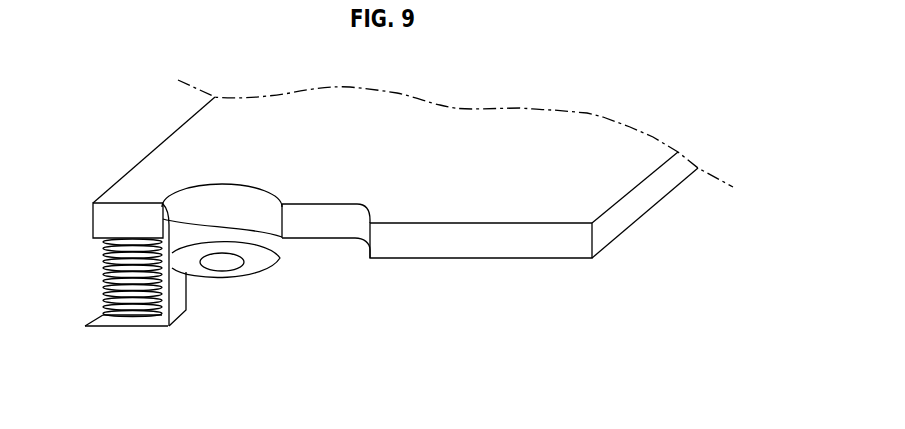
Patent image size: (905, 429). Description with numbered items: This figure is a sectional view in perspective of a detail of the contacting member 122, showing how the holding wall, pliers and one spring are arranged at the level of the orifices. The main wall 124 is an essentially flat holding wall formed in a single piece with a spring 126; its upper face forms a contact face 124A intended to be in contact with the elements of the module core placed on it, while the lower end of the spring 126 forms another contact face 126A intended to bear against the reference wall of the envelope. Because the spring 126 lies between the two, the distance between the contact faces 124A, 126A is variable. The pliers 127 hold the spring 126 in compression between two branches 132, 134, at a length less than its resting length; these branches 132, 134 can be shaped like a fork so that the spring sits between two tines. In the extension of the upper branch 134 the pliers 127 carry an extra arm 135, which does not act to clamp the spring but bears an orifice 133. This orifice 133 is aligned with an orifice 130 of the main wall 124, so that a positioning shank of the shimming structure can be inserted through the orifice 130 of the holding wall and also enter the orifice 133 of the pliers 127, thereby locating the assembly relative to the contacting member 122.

The contacting member 122 is at (601, 124).
The main wall 124 is at (492, 245).
The upper face / contact face 124A is at (503, 148).
The spring 126 is at (94, 282).
The contact face 126A is at (127, 334).
The pliers 127 is at (192, 293).
The orifice 130 is at (222, 211).
The branch 132 is at (94, 313).
The orifice 133 is at (222, 260).
The branch 134 is at (170, 252).
The extra arm 135 is at (265, 260).